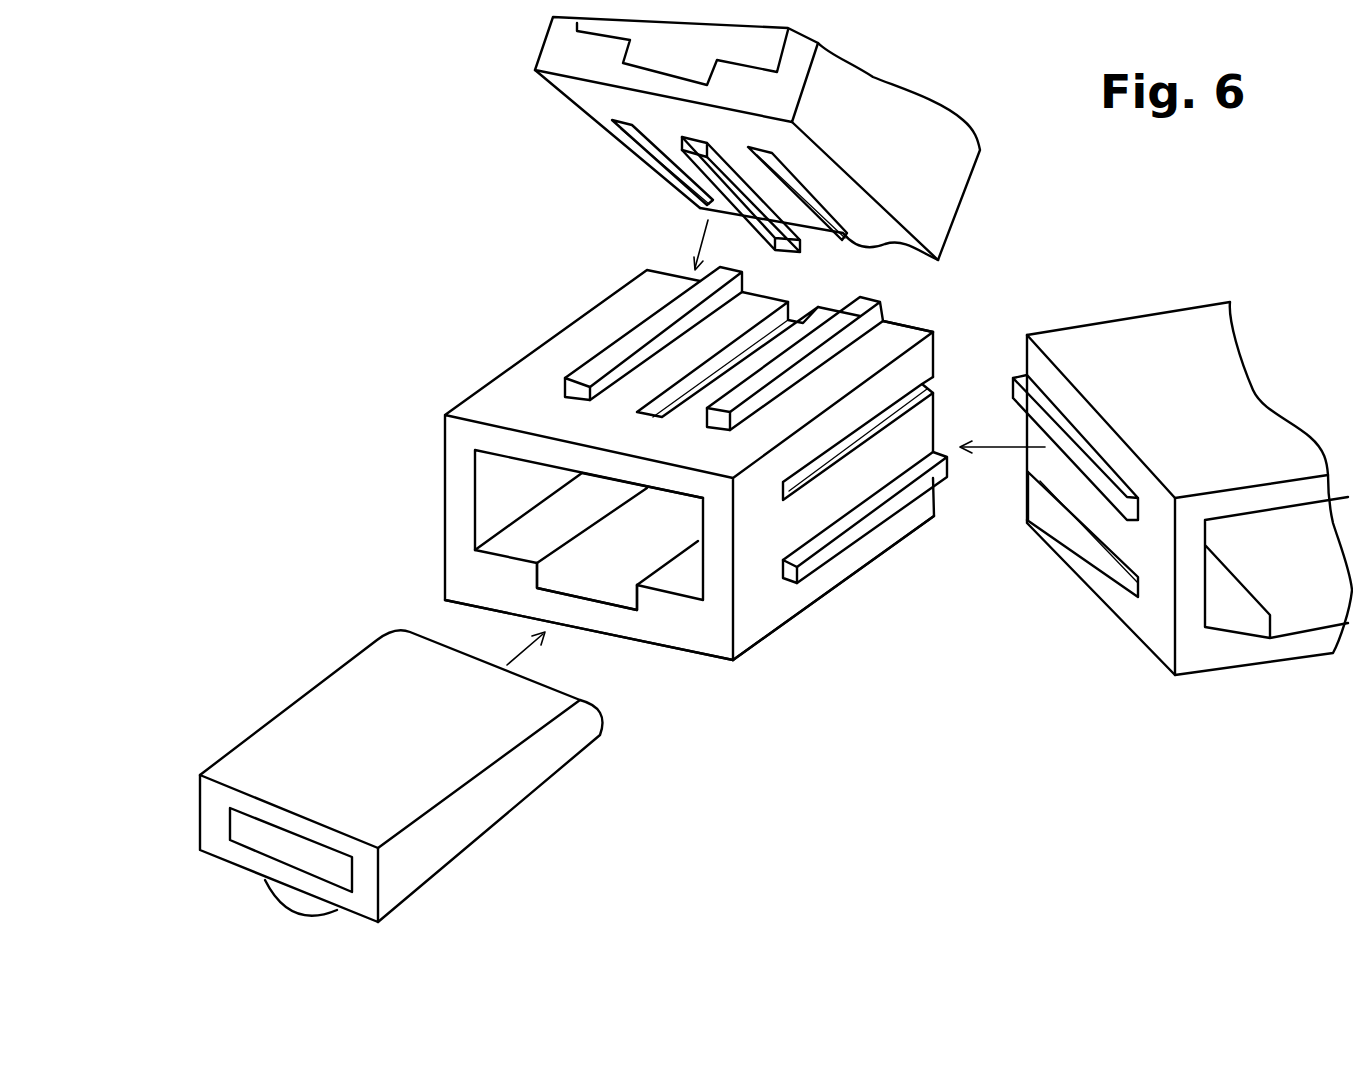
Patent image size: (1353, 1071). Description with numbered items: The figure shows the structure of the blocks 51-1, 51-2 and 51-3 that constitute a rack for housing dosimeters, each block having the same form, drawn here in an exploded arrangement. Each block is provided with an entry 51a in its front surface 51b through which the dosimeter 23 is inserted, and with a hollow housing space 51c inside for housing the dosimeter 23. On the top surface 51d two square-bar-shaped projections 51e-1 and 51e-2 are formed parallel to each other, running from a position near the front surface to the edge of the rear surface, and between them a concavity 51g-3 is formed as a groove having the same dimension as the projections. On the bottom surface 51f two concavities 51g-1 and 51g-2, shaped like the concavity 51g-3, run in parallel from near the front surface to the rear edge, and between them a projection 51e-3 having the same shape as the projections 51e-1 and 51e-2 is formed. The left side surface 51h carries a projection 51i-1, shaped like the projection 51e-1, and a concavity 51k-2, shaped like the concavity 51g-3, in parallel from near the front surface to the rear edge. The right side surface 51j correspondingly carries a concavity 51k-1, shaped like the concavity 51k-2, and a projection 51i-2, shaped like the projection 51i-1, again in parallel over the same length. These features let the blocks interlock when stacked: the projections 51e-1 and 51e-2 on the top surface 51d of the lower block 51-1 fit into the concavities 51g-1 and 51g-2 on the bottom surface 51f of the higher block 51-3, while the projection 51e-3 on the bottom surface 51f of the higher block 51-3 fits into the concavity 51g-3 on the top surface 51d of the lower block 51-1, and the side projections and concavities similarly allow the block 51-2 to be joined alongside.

The dosimeter 23 is at (300, 690).
The block 51-1 is at (508, 368).
The block 51-2 is at (1167, 327).
The block 51-3 is at (947, 177).
The entry 51a is at (472, 507).
The front surface 51b is at (698, 632).
The hollow housing space 51c is at (622, 568).
The top surface 51d is at (900, 335).
The projection 51e-1 is at (873, 295).
The projection 51e-2 is at (612, 353).
The projection 51e-3 is at (717, 188).
The bottom surface 51f is at (585, 98).
The concavity 51g-1 is at (900, 226).
The concavity 51g-2 is at (648, 148).
The concavity 51g-3 is at (790, 312).
The left side surface 51h is at (1160, 638).
The projection 51i-1 is at (1100, 485).
The projection 51i-2 is at (832, 548).
The right side surface 51j is at (762, 617).
The concavity 51k-1 is at (925, 383).
The concavity 51k-2 is at (1125, 577).